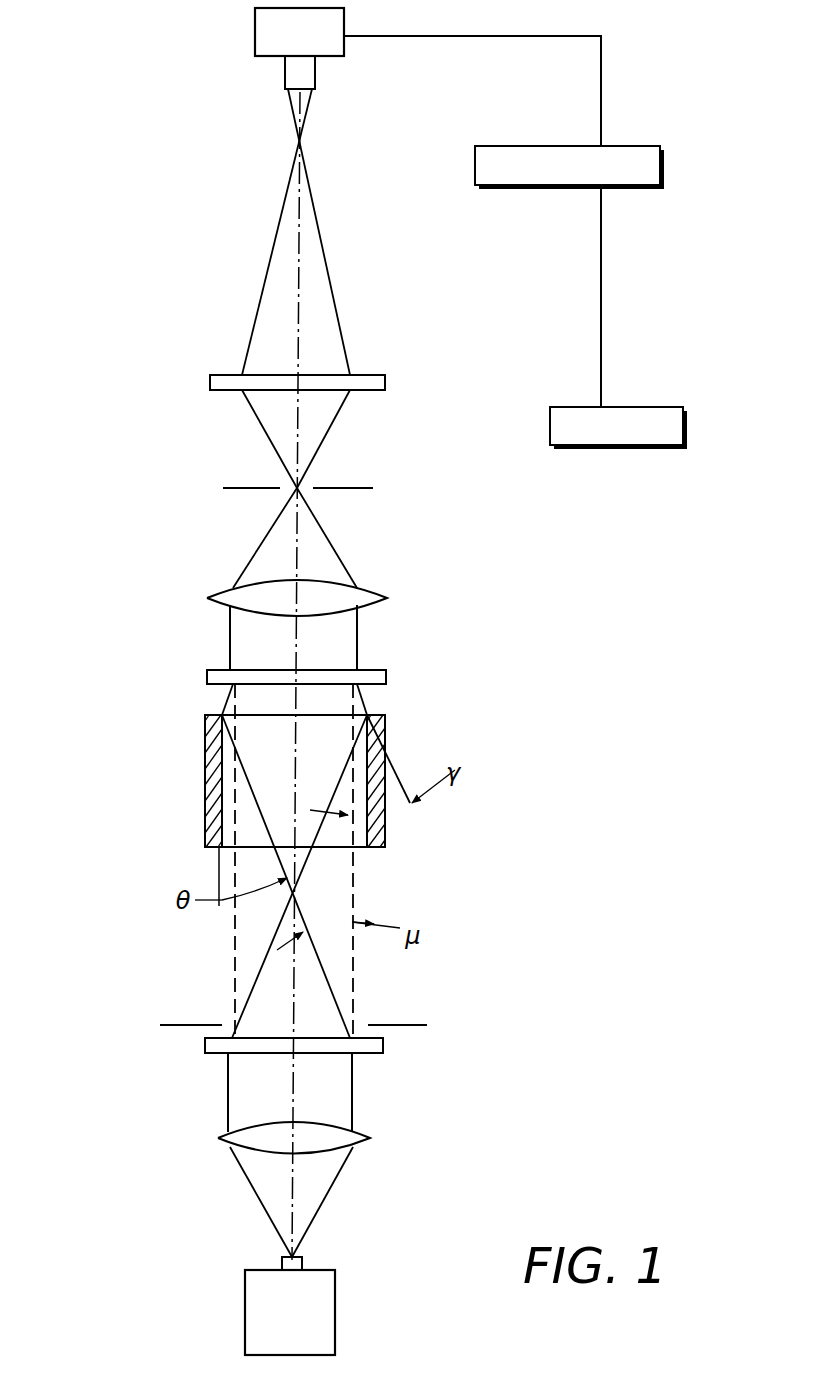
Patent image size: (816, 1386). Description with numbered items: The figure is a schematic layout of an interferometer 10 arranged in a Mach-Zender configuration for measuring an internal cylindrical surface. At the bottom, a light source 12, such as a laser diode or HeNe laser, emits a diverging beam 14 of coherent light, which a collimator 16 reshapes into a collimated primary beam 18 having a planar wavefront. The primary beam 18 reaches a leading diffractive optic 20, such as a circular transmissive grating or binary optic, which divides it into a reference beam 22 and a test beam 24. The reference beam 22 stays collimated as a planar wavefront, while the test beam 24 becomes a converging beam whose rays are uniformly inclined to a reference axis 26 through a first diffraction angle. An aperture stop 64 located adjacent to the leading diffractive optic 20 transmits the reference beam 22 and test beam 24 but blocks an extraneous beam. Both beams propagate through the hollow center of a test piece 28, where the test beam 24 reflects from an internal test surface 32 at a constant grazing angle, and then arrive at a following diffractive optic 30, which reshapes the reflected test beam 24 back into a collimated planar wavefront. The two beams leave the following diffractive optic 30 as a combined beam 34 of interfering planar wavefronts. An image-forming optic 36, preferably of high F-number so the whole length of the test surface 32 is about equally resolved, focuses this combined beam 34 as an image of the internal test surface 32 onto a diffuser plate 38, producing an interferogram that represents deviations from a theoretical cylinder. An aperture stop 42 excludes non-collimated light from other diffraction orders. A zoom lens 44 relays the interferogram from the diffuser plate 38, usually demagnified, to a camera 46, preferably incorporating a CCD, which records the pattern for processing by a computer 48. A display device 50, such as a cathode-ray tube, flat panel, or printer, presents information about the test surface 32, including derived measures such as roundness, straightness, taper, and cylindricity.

The interferometer 10 is at (124, 258).
The light source 12 is at (323, 1312).
The diverging beam 14 is at (334, 1181).
The collimator 16 is at (218, 1138).
The primary beam 18 is at (352, 1088).
The leading diffractive optic 20 is at (205, 1045).
The reference beam 22 is at (235, 976).
The test beam 24 is at (336, 995).
The reference axis 26 is at (299, 300).
The test piece 28 is at (205, 781).
The following diffractive optic 30 is at (207, 677).
The internal test surface 32 is at (216, 822).
The combined beam 34 is at (357, 640).
The image-forming optic 36 is at (232, 590).
The diffuser plate 38 is at (210, 378).
The aperture stop 42 is at (262, 488).
The zoom lens 44 is at (285, 73).
The camera 46 is at (299, 32).
The computer 48 is at (540, 188).
The display device 50 is at (597, 447).
The aperture stop 64 is at (414, 1028).